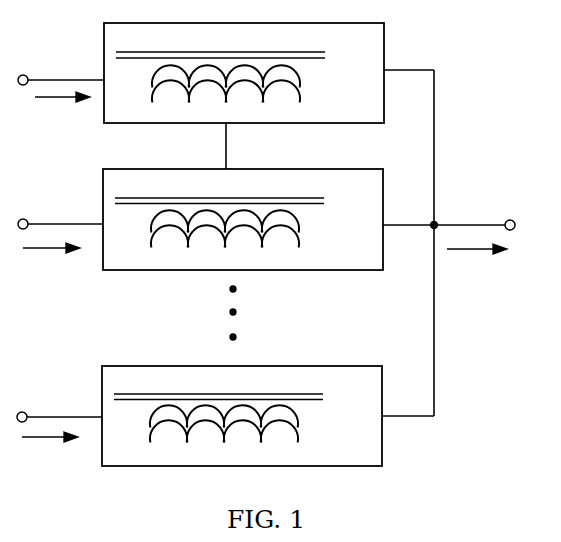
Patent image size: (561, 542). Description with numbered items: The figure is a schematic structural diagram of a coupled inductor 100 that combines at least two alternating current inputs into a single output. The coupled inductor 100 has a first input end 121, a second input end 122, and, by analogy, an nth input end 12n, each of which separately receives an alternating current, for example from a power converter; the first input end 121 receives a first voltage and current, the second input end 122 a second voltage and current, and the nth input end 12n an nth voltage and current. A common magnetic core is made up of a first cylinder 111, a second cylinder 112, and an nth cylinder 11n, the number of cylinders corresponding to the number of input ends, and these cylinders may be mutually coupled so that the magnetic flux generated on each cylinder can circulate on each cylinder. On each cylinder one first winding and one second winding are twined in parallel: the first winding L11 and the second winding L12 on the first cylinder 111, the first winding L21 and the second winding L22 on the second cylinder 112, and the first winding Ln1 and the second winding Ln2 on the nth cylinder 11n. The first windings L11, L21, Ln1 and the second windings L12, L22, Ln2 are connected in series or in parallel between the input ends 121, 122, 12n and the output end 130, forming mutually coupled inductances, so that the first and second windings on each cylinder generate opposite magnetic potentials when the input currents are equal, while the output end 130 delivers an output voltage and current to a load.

The coupled inductor 100 is at (512, 56).
The first cylinder 111 is at (244, 73).
The second cylinder 112 is at (243, 219).
The nth cylinder 11n is at (242, 416).
The first winding L11 is at (263, 79).
The second winding L12 is at (263, 100).
The first winding L21 is at (262, 223).
The second winding L22 is at (262, 245).
The first winding Ln1 is at (260, 418).
The second winding Ln2 is at (260, 440).
The first input end 121 is at (61, 87).
The second input end 122 is at (60, 238).
The nth input end 12n is at (59, 426).
The output end 130 is at (449, 233).